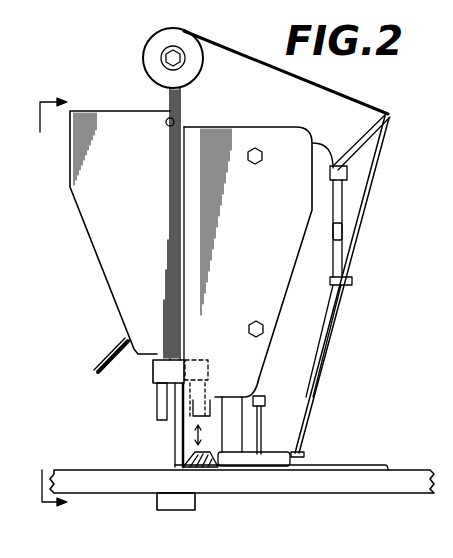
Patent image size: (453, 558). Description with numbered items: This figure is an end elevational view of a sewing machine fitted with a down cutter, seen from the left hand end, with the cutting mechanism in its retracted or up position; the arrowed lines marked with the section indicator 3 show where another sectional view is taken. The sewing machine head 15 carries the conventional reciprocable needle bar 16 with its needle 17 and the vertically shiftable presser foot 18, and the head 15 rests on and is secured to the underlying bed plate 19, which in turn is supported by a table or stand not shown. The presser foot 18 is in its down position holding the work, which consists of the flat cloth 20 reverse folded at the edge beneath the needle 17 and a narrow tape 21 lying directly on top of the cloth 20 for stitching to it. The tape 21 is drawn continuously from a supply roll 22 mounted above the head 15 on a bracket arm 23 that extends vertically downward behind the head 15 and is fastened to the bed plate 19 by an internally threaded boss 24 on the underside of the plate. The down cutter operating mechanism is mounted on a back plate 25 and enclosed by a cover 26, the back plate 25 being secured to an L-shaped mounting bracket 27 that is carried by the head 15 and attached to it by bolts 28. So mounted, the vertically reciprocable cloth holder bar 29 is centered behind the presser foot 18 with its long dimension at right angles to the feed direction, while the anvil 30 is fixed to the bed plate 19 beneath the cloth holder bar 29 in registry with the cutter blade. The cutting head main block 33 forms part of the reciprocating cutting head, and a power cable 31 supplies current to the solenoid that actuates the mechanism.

The section line 3— 3 is at (48, 303).
The sewing machine head 15 is at (324, 156).
The reciprocable needle bar 16 is at (265, 400).
The needle 17 is at (259, 450).
The presser foot 18 is at (233, 456).
The sewing machine bed plate 19 is at (322, 486).
The flat cloth 20 is at (373, 466).
The narrow tape 21 is at (300, 438).
The supply roll 22 is at (144, 50).
The bracket arm 23 is at (167, 97).
The internally threaded boss 24 is at (180, 501).
The back plate 25 is at (178, 190).
The cover 26 is at (97, 235).
The L-shaped mounting bracket 27 is at (296, 112).
The bolts 28 is at (258, 165).
The cloth holder bar 29 is at (212, 395).
The anvil 30 is at (199, 472).
The power cable 31 is at (97, 356).
The cutting head main block 33 is at (154, 373).